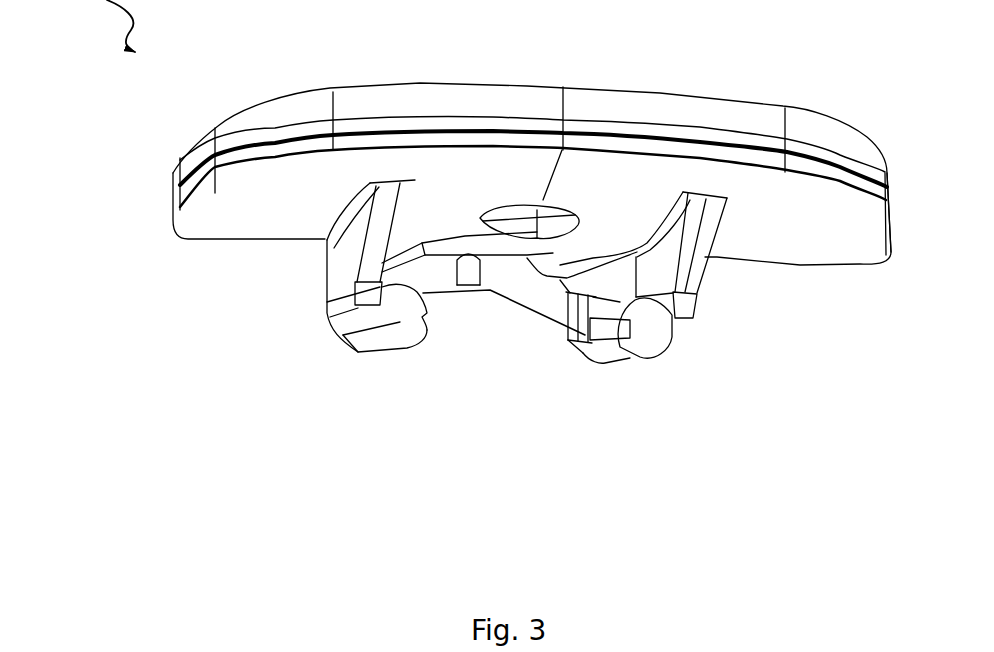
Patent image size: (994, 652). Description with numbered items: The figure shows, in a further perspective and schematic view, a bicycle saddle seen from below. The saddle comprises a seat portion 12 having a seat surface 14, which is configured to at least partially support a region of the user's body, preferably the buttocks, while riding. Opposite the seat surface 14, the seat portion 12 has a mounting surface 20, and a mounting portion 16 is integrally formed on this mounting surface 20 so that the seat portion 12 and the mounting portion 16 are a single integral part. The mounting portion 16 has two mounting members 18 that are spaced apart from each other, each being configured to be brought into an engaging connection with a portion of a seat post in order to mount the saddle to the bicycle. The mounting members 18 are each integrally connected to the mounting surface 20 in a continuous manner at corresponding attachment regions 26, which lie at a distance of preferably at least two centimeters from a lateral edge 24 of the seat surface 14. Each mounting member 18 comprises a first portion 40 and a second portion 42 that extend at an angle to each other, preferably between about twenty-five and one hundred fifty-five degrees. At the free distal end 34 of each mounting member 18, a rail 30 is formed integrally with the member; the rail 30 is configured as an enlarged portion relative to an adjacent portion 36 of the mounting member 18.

The seat portion 12 is at (138, 115).
The seat surface 14 is at (527, 85).
The mounting portion 16 is at (182, 292).
The mounting member 18 is at (362, 472).
The mounting surface 20 is at (465, 213).
The lateral edge 24 is at (891, 262).
The attachment region 26 is at (695, 190).
The rail 30 is at (425, 398).
The end 34 is at (400, 455).
The adjacent portion 36 is at (370, 300).
The first portion 40 is at (287, 295).
The second portion 42 is at (297, 370).